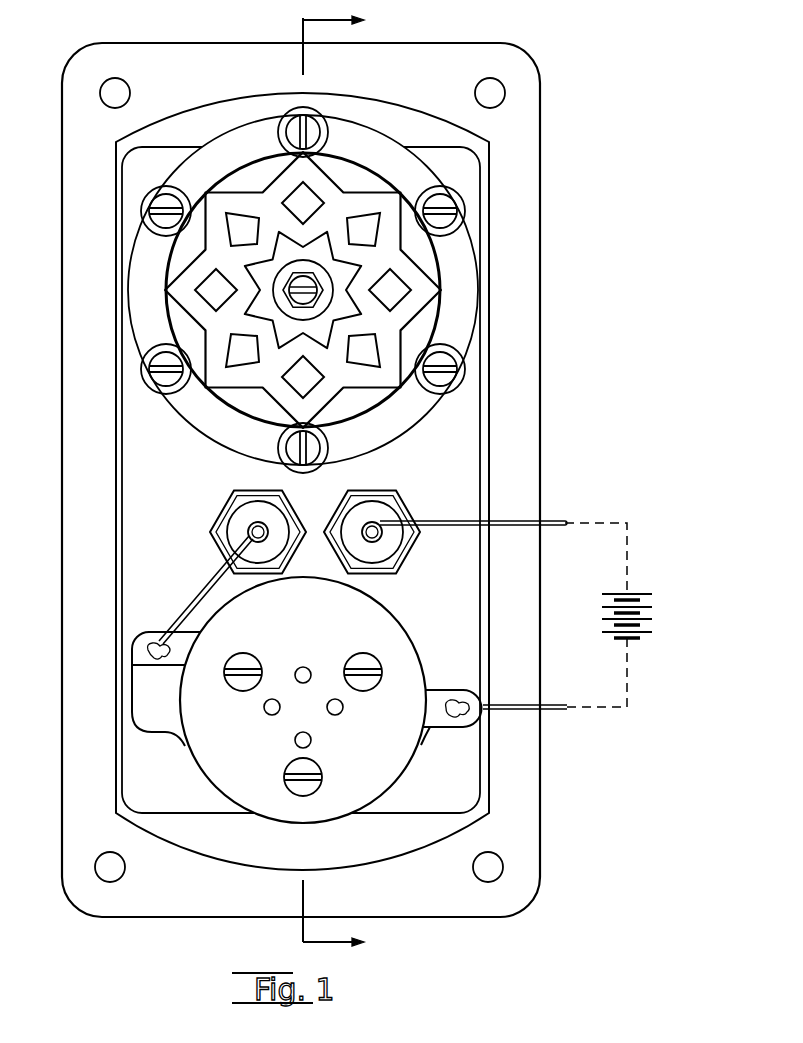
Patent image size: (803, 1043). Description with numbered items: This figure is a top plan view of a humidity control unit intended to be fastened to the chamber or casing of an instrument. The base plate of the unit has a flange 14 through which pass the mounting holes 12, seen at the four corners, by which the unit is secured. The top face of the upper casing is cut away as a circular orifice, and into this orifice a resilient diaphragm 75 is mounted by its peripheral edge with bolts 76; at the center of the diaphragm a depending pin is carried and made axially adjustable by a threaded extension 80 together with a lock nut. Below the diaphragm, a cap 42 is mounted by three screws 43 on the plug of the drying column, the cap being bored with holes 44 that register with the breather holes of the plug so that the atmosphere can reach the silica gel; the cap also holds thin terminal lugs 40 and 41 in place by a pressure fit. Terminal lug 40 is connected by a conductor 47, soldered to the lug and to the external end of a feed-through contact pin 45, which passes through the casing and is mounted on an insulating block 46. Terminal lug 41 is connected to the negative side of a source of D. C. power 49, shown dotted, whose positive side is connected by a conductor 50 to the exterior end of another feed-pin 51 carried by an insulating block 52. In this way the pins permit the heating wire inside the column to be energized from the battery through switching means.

The mounting holes 12 is at (112, 867).
The flange 14 is at (512, 673).
The terminal lug 40 is at (178, 641).
The terminal lug 41 is at (437, 713).
The cap 42 is at (371, 619).
The screws 43 is at (303, 714).
The holes 44 is at (269, 713).
The feed-through contact pin 45 is at (252, 532).
The insulating block 46 is at (249, 511).
The conductor 47 is at (214, 577).
The source of D. C. power 49 is at (647, 604).
The conductor 50 is at (549, 521).
The feed-pin 51 is at (380, 536).
The insulating block 52 is at (380, 512).
The resilient diaphragm 75 is at (382, 351).
The bolts 76 is at (440, 203).
The threaded extension 80 is at (312, 281).